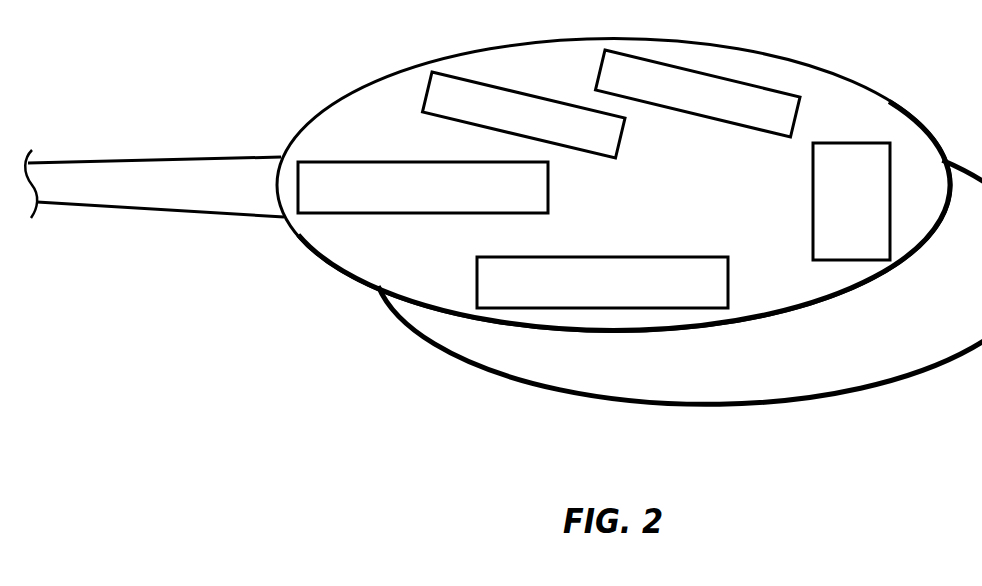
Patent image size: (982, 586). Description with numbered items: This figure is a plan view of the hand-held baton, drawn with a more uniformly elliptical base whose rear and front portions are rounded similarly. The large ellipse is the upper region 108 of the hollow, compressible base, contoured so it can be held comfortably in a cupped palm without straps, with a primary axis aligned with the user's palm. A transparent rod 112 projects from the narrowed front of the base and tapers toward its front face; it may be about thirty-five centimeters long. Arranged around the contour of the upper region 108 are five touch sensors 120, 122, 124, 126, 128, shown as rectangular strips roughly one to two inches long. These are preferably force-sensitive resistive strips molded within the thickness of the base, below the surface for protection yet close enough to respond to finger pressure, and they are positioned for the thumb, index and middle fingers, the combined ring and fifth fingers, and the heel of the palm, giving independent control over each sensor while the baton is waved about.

The upper region 108 is at (838, 73).
The transparent rod 112 is at (100, 160).
The touch sensor 120 is at (520, 295).
The touch sensor 122 is at (340, 205).
The touch sensor 124 is at (460, 90).
The touch sensor 126 is at (732, 98).
The touch sensor 128 is at (872, 245).